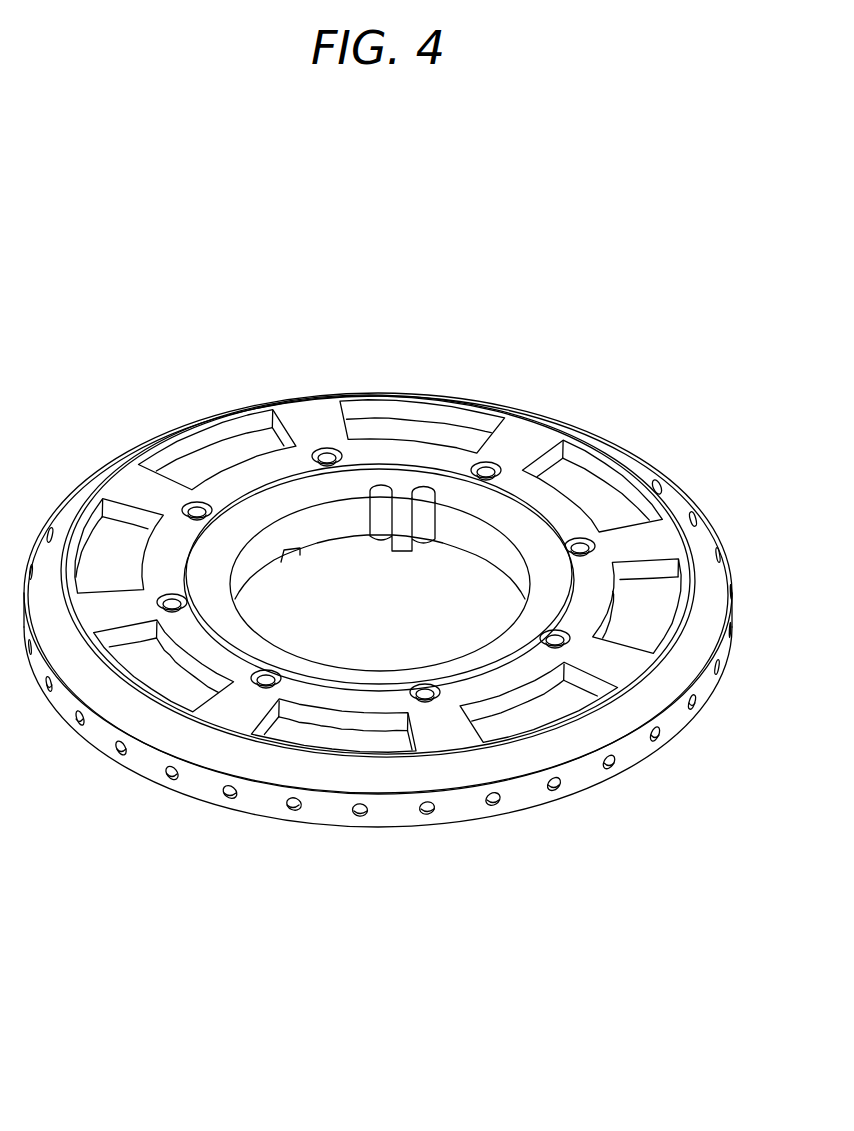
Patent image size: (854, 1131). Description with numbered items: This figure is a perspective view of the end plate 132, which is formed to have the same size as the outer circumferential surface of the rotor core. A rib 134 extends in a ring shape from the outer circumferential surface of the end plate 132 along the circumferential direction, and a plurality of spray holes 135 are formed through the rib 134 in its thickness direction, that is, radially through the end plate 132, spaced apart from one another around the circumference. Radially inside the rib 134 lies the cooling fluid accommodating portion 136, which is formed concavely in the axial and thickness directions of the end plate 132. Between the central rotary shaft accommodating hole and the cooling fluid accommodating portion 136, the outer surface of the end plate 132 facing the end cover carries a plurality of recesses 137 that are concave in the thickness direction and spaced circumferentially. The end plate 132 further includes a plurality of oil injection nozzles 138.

The end plate 132 is at (398, 635).
The rib 134 is at (325, 807).
The spray hole 135 is at (360, 803).
The cooling fluid accommodating portion 136 is at (700, 580).
The recess 137 is at (588, 486).
The oil injection nozzle 138 is at (326, 446).